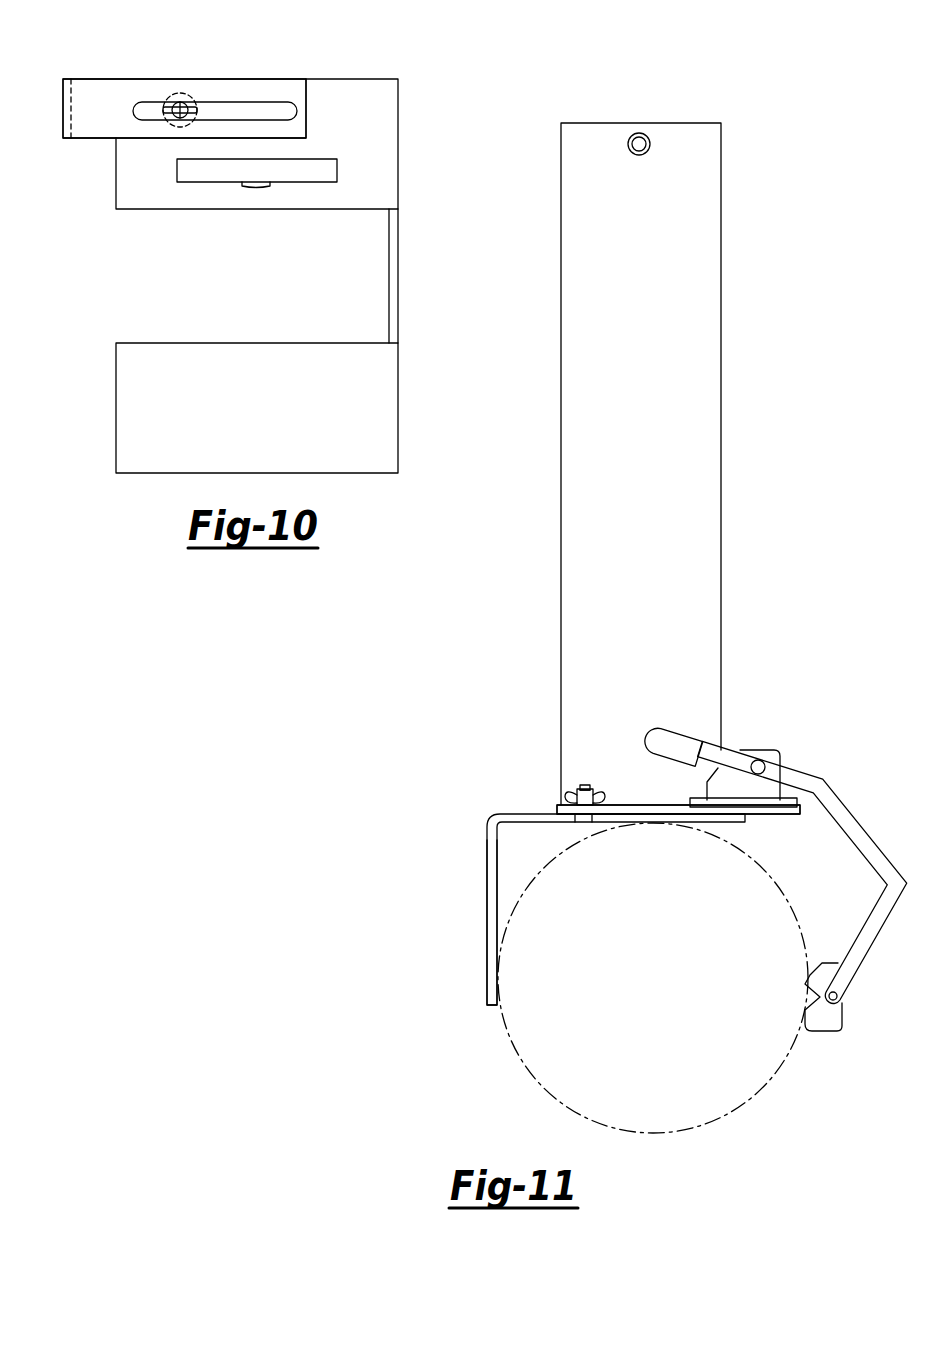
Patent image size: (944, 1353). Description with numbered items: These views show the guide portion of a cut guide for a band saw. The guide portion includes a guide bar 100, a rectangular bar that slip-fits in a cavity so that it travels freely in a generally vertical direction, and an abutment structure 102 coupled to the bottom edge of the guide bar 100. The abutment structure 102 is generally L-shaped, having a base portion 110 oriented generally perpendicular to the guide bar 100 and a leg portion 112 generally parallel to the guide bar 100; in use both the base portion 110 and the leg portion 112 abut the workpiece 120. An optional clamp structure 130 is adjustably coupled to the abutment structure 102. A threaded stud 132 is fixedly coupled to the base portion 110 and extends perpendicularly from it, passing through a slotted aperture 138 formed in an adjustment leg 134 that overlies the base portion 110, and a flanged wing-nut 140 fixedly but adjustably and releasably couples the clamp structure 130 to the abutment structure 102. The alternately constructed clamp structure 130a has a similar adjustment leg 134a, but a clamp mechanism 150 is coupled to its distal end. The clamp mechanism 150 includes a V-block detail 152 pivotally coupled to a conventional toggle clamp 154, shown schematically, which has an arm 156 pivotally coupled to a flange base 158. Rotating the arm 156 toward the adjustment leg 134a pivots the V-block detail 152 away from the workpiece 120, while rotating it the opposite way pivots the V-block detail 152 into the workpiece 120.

In FIG. 10, the guide bar 100 is at (295, 172).
In FIG. 10, the abutment structure 102 is at (420, 411).
In FIG. 11, the abutment structure 102 is at (425, 946).
In FIG. 10, the base portion 110 is at (151, 198).
In FIG. 11, the base portion 110 is at (531, 818).
In FIG. 10, the leg portion 112 is at (398, 289).
In FIG. 11, the leg portion 112 is at (491, 890).
In FIG. 11, the workpiece 120 is at (520, 1058).
In FIG. 10, the clamp structure 130 is at (88, 162).
In FIG. 11, the clamp structure 130a is at (860, 768).
In FIG. 10, the threaded stud 132 is at (181, 103).
In FIG. 11, the threaded stud 132 is at (585, 785).
In FIG. 10, the adjustment leg 134 is at (275, 88).
In FIG. 11, the adjustment leg 134a is at (640, 805).
In FIG. 10, the slotted aperture 138 is at (147, 104).
In FIG. 11, the flanged wing-nut 140 is at (566, 793).
In FIG. 11, the clamp mechanism 150 is at (758, 735).
In FIG. 11, the V-block detail 152 is at (828, 1022).
In FIG. 11, the toggle clamp 154 is at (752, 808).
In FIG. 11, the arm 156 is at (670, 738).
In FIG. 11, the flange base 158 is at (727, 788).